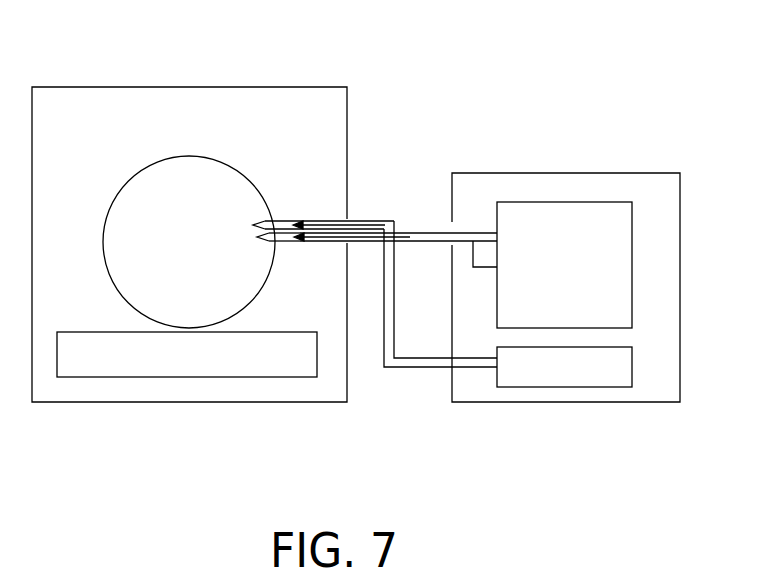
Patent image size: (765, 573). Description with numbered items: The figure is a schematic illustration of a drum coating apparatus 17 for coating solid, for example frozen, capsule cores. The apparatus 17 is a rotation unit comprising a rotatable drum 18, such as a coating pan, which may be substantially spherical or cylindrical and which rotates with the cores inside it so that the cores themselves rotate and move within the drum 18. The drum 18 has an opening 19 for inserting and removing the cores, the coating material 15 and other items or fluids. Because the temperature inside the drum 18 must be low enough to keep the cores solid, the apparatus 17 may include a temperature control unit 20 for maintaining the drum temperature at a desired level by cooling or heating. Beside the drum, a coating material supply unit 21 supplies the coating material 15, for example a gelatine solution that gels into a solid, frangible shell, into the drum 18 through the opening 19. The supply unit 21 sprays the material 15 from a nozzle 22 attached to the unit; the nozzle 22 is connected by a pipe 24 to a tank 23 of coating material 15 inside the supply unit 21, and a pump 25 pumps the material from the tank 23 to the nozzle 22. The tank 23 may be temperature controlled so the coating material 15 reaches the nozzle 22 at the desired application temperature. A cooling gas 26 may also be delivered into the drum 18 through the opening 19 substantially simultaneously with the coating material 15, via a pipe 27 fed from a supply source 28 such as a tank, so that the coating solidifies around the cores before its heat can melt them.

The coating material 15 is at (548, 269).
The drum coating apparatus 17 is at (238, 87).
The rotatable drum 18 is at (217, 160).
The opening 19 is at (375, 310).
The temperature control unit 20 is at (173, 367).
The coating material supply unit 21 is at (577, 173).
The nozzle 22 is at (262, 235).
The tank 23 is at (564, 232).
The pipe 24 is at (413, 231).
The pump 25 is at (470, 257).
The cooling gas 26 is at (564, 367).
The pipe 27 is at (384, 370).
The supply source 28 is at (564, 405).